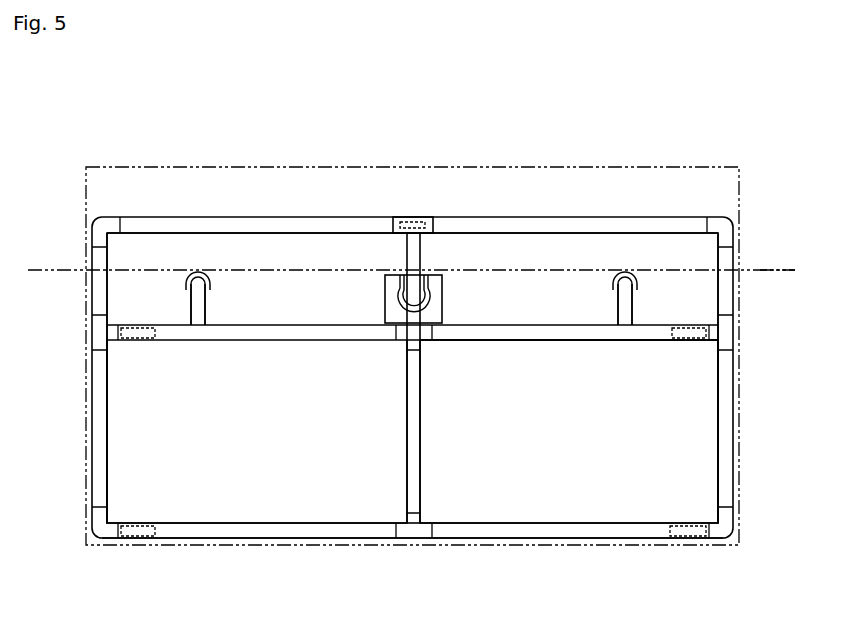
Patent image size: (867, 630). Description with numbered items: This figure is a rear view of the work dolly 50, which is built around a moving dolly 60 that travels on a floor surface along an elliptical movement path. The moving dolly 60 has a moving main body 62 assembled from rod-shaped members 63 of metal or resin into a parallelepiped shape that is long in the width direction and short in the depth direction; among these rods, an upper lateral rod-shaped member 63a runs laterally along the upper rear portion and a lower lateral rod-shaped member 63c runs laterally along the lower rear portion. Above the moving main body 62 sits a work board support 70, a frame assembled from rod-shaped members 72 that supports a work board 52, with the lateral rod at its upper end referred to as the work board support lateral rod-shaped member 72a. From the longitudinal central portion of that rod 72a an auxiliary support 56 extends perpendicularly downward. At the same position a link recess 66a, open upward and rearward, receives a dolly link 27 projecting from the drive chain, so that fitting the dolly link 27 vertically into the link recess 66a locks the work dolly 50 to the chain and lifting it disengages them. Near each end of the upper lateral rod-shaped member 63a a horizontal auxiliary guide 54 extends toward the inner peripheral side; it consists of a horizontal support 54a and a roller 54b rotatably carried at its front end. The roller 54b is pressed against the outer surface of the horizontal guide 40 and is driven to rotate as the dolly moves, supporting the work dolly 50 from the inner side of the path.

The work dolly 50 is at (590, 133).
The work board 52 is at (740, 180).
The horizontal guide 40 is at (778, 268).
The work board support 70 is at (226, 216).
The rod-shaped member 72 is at (107, 300).
The work board support lateral rod-shaped member 72a is at (313, 232).
The auxiliary support 56 is at (415, 217).
The dolly link 27 is at (424, 248).
The moving dolly 60 is at (442, 290).
The link recess 66a is at (404, 326).
The horizontal auxiliary guide 54 is at (277, 380).
The horizontal support 54a is at (193, 312).
The roller 54b is at (213, 283).
The rod-shaped member 63 is at (604, 523).
The upper lateral rod-shaped member 63a is at (593, 343).
The lower lateral rod-shaped member 63c is at (569, 372).
The moving main body 62 is at (562, 540).